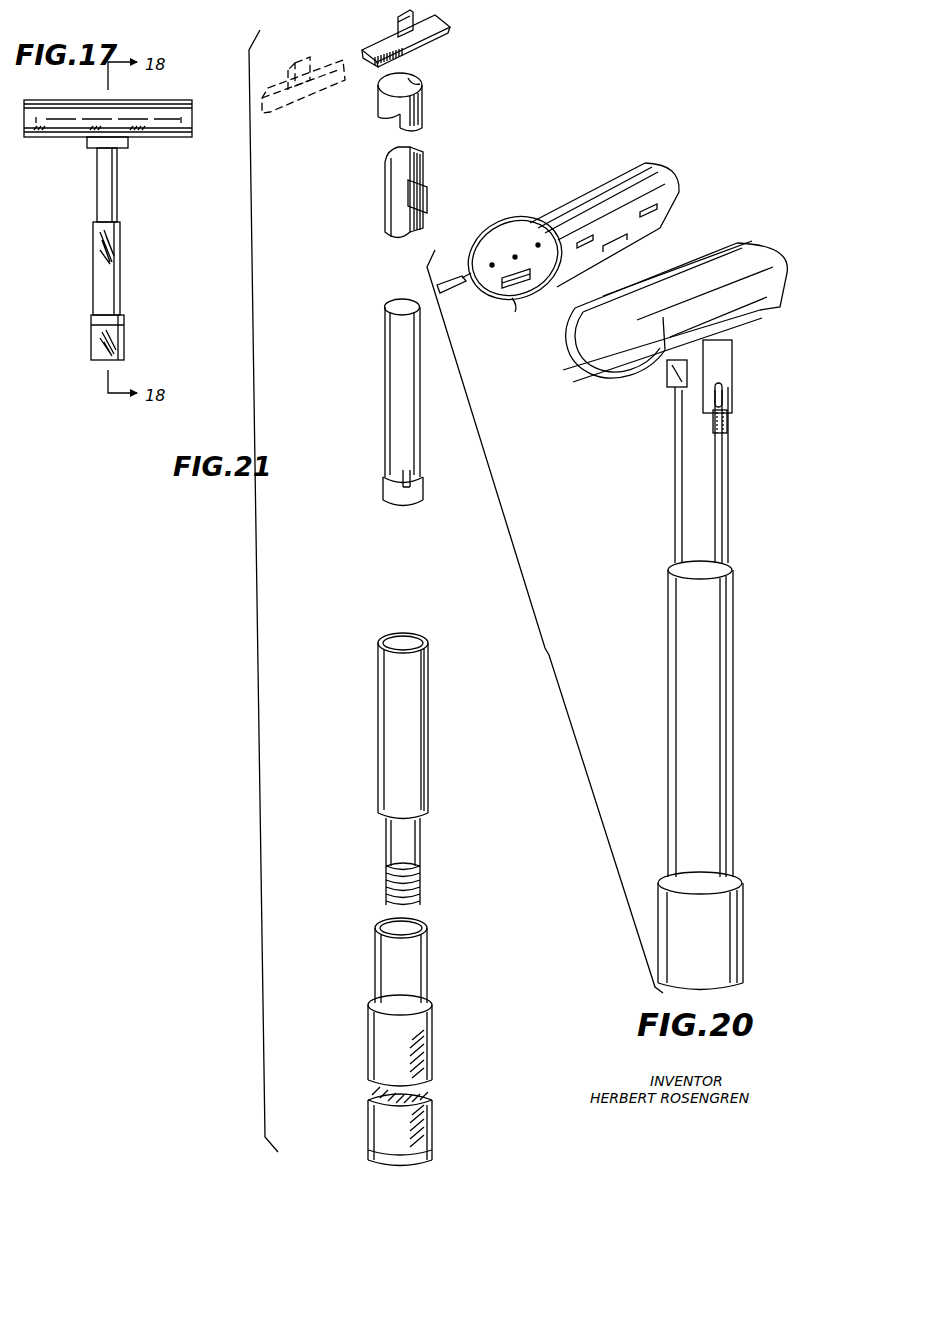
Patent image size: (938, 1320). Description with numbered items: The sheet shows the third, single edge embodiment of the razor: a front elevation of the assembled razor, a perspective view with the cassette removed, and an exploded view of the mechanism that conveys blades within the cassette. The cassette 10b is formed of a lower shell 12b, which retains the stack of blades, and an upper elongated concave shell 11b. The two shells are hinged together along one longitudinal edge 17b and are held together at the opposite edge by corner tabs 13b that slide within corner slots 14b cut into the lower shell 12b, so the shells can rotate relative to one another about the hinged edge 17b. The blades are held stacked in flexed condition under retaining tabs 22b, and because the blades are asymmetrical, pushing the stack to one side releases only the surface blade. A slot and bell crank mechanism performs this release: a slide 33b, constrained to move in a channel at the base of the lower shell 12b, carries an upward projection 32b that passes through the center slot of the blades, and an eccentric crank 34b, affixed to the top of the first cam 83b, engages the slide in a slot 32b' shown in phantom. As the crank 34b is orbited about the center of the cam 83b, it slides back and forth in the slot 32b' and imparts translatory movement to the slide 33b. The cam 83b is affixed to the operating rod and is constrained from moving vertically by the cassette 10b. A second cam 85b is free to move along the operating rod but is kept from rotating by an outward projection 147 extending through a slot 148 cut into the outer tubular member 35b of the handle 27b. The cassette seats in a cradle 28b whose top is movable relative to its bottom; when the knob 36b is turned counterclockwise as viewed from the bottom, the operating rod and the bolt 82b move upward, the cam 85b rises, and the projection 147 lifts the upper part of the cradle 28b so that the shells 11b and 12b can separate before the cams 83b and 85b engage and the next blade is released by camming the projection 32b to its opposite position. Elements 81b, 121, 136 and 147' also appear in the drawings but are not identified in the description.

In FIG. 17, the cassette 10b is at (165, 93).
In FIG. 20, the cassette 10b is at (668, 150).
In FIG. 17, the upper concave shell 11b is at (192, 104).
In FIG. 20, the upper concave shell 11b is at (549, 203).
In FIG. 17, the lower shell 12b is at (190, 130).
In FIG. 17, the cradle 28b is at (48, 139).
In FIG. 20, the cradle 28b is at (620, 390).
In FIG. 17, the handle 27b is at (125, 243).
In FIG. 17, the knob 36b is at (91, 343).
In FIG. 21, the knob 36b is at (430, 1109).
In FIG. 21, the upward projection 32b is at (312, 68).
In FIG. 21, the slot 32b' is at (318, 117).
In FIG. 21, the slide 33b is at (450, 33).
In FIG. 21, the eccentric crank 34b is at (423, 79).
In FIG. 21, the first cam 83b is at (383, 107).
In FIG. 21, the second cam 85b is at (423, 164).
In FIG. 21, the outward projection 147 is at (448, 196).
In FIG. 20, the corner slots 14b is at (467, 268).
In FIG. 20, the corner tabs 13b is at (470, 297).
In FIG. 20, the retaining tabs 22b is at (534, 266).
In FIG. 21, the rod 121 is at (420, 416).
In FIG. 21, the rod collar 136 is at (422, 491).
In FIG. 21, the bolt 82b is at (422, 751).
In FIG. 21, the threaded rod 81b is at (413, 839).
In FIG. 20, the hinged longitudinal edge 17b is at (670, 188).
In FIG. 20, the bracket 147' is at (748, 376).
In FIG. 20, the slot 148 is at (727, 418).
In FIG. 20, the outer tubular member 35b is at (725, 511).